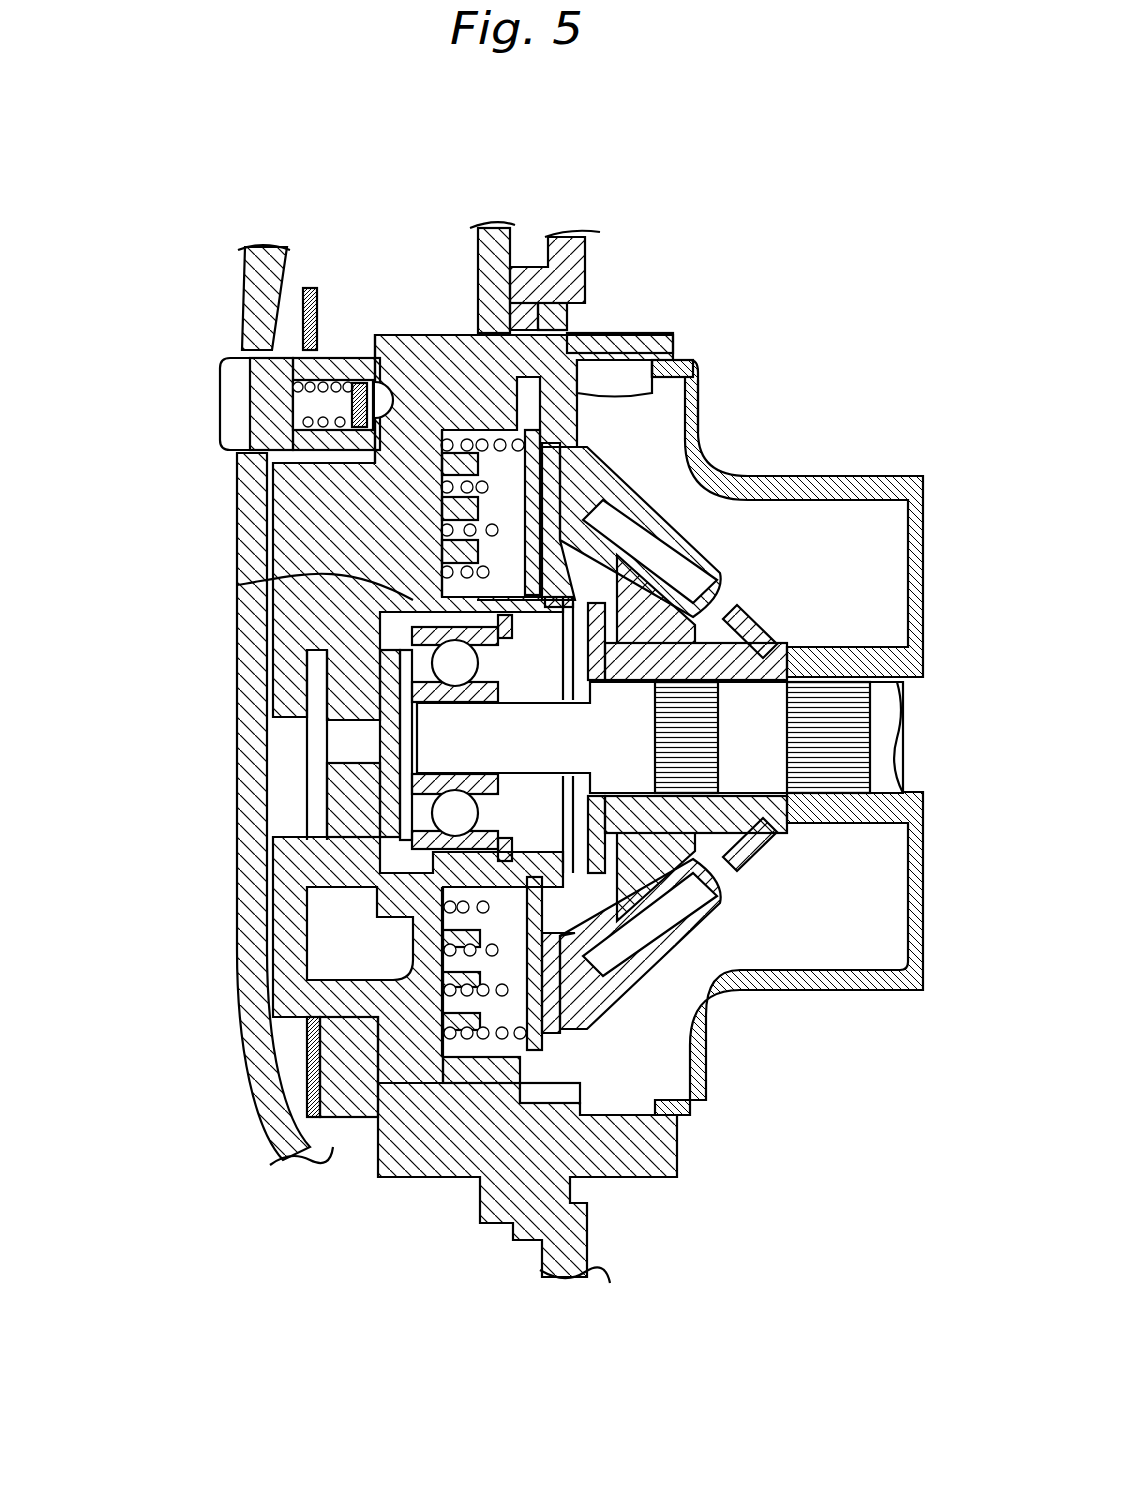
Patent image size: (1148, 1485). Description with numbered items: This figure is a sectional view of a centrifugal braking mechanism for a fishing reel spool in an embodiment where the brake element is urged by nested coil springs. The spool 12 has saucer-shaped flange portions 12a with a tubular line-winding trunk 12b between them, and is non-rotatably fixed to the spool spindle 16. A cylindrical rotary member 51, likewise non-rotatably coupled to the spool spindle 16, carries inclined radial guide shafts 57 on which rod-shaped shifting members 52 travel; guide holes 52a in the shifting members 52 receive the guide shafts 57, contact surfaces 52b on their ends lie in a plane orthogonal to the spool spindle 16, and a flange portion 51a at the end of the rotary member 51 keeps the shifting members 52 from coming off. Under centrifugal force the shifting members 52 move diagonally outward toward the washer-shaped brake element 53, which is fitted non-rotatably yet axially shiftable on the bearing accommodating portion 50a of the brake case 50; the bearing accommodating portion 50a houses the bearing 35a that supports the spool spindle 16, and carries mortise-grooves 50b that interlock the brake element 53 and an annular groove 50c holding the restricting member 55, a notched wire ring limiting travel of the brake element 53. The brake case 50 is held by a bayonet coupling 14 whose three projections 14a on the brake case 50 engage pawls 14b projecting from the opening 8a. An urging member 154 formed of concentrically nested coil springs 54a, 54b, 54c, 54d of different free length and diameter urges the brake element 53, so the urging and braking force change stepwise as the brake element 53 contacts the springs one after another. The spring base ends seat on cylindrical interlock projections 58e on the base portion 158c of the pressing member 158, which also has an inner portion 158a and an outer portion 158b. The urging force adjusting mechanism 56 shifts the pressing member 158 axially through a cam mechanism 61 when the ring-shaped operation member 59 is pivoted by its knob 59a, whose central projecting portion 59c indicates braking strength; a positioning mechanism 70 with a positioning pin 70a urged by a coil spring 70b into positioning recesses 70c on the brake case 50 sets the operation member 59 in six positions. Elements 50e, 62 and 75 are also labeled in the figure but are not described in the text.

The opening 8a is at (556, 318).
The spool 12 is at (733, 468).
The flange portions 12a is at (703, 432).
The line-winding trunk 12b is at (872, 476).
The bayonet coupling 14 is at (592, 282).
The projections 14a is at (580, 313).
The pawls 14b is at (523, 317).
The spool spindle 16 is at (762, 775).
The bearing 35a is at (505, 700).
The brake case 50 is at (237, 520).
The bearing accommodating portion 50a is at (330, 670).
The mortise-grooves 50b is at (370, 600).
The annular groove 50c is at (520, 700).
The housing bracket 50e is at (693, 380).
The rotary member 51 is at (775, 633).
The flange portion 51a is at (563, 825).
The shifting members 52 is at (708, 553).
The guide holes 52a is at (735, 610).
The contact surfaces 52b is at (570, 462).
The brake element 53 is at (557, 420).
The coil spring 54a is at (368, 435).
The coil spring 54b is at (447, 465).
The coil spring 54c is at (447, 527).
The coil spring 54d is at (447, 578).
The restricting member 55 is at (555, 598).
The urging force adjusting mechanism 56 is at (355, 1128).
The guide shafts 57 is at (640, 545).
The interlock projections 58e is at (468, 470).
The operation member 59 is at (310, 1107).
The knob 59a is at (270, 373).
The projecting portion 59c is at (240, 405).
The cam mechanism 61 is at (410, 1073).
The plate 62 is at (677, 343).
The positioning mechanism 70 is at (323, 352).
The positioning pin 70a is at (338, 382).
The coil spring 70b is at (310, 288).
The positioning recesses 70c is at (368, 400).
The friction member 75 is at (313, 1073).
The urging member 154 is at (468, 430).
The pressing member 158 is at (445, 1073).
The inner portion 158a is at (325, 615).
The outer portion 158b is at (418, 465).
The base portion 158c is at (287, 512).